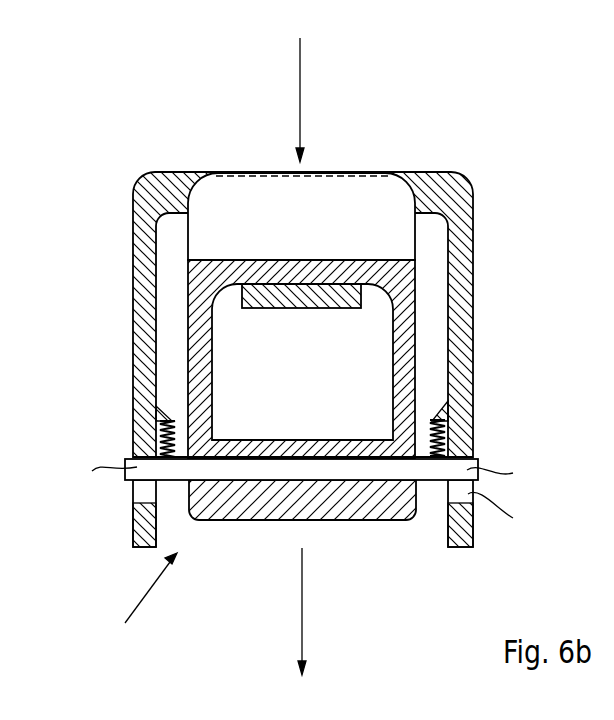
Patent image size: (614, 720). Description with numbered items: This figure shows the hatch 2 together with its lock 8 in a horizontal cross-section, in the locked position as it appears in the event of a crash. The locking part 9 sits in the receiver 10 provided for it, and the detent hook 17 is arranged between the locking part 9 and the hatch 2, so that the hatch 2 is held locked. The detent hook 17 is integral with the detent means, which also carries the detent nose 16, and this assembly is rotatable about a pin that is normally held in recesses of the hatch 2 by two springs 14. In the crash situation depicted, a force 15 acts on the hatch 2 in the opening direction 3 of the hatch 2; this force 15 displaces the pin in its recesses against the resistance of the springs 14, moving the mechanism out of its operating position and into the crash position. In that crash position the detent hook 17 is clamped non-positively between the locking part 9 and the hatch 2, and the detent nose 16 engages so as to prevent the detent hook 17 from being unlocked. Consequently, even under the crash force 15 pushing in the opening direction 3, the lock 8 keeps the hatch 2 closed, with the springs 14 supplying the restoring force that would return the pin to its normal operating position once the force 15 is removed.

The hatch 2 is at (428, 182).
The opening direction 3 is at (302, 593).
The lock 8 is at (142, 600).
The locking part 9 is at (333, 292).
The receiver 10 is at (316, 385).
The springs 14 is at (175, 432).
The force 15 is at (300, 78).
The detent nose 16 is at (233, 180).
The detent hook 17 is at (217, 240).